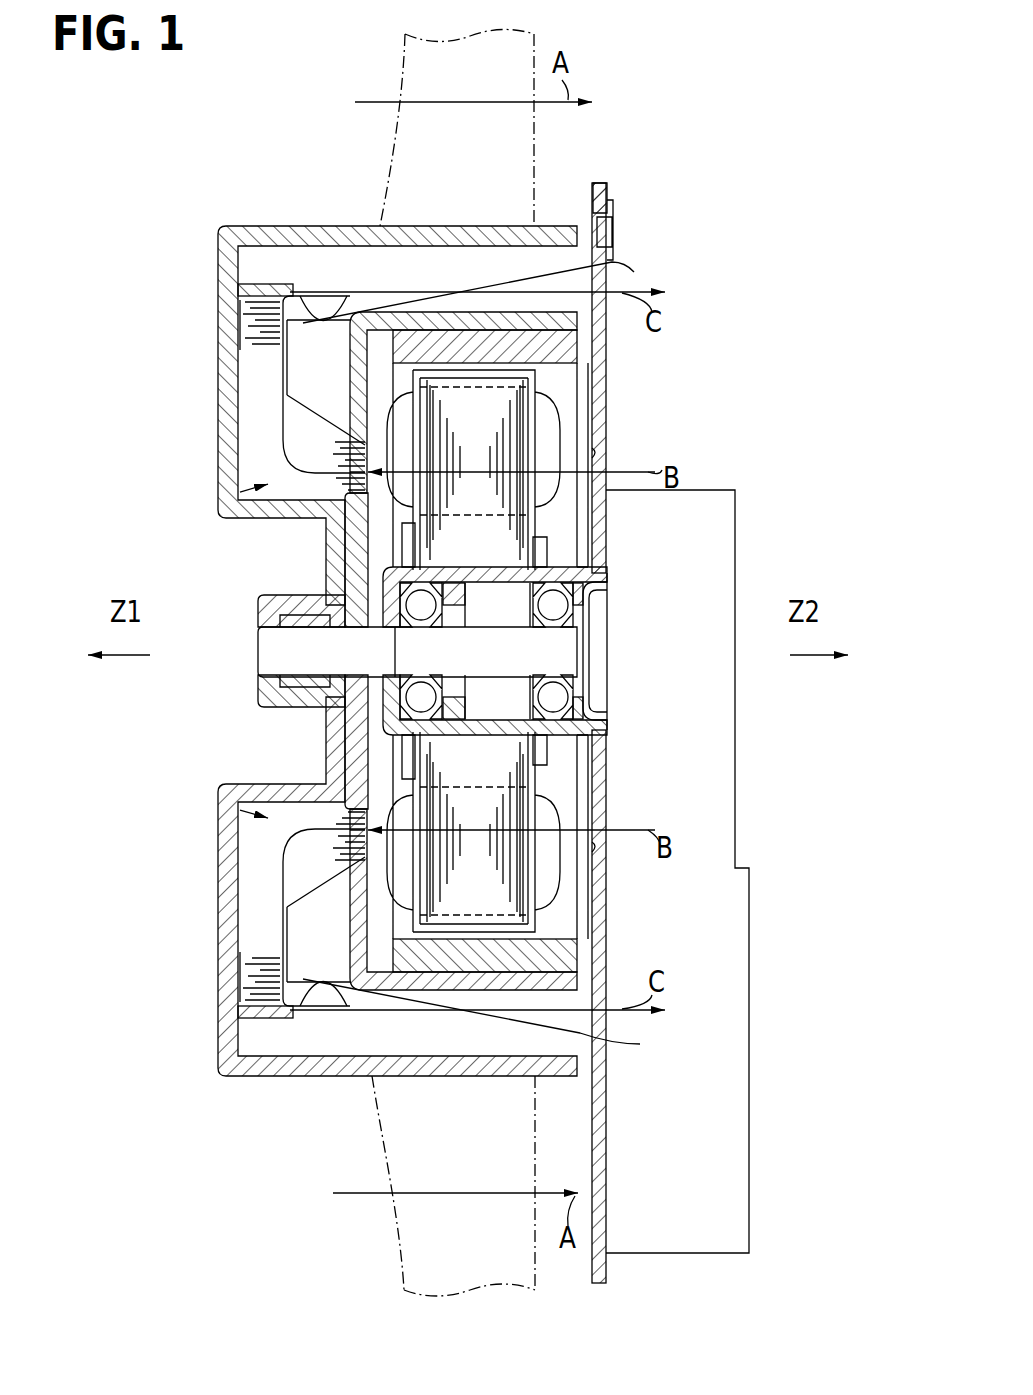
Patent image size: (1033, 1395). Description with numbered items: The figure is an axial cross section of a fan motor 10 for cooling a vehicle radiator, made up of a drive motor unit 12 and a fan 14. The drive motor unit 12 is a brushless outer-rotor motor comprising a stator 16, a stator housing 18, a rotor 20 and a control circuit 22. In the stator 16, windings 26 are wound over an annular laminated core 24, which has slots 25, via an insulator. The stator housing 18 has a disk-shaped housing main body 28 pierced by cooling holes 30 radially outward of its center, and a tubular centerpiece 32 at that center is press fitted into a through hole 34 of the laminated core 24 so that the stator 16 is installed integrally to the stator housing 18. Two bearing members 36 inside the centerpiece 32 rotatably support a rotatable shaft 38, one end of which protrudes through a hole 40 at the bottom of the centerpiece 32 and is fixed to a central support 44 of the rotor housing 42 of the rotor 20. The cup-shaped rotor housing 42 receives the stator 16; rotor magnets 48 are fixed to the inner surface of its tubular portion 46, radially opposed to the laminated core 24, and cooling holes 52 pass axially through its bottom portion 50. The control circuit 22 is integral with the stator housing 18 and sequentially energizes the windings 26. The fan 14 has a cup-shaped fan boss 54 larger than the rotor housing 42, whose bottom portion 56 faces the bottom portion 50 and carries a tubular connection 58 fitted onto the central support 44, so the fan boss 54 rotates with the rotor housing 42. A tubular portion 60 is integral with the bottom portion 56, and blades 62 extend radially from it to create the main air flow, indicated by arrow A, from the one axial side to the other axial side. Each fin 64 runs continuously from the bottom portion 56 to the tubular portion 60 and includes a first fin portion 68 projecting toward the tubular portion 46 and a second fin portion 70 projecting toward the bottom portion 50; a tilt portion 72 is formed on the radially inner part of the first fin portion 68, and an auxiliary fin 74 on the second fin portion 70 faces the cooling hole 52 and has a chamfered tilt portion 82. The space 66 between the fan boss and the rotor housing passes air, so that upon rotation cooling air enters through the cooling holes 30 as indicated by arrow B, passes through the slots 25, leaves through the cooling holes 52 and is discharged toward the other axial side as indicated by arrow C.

The fan motor 10 is at (128, 225).
The drive motor unit 12 is at (547, 305).
The fan 14 is at (350, 615).
The stator 16 is at (581, 638).
The stator housing 18 is at (608, 360).
The rotor 20 is at (469, 553).
The control circuit 22 is at (735, 490).
The laminated core 24 is at (560, 400).
The slots 25 is at (493, 513).
The windings 26 is at (580, 425).
The housing main body 28 is at (615, 447).
The cooling holes 30 is at (600, 457).
The centerpiece 32 is at (604, 572).
The through hole 34 is at (604, 604).
The bearing members 36 is at (432, 627).
The rotatable shaft 38 is at (258, 660).
The hole 40 is at (395, 632).
The rotor housing 42 is at (440, 306).
The central support 44 is at (312, 596).
The tubular portion 46 is at (520, 320).
The rotor magnets 48 is at (482, 340).
The bottom portion 50 is at (350, 376).
The cooling holes 52 is at (358, 428).
The fan boss 54 is at (217, 398).
The bottom portion 56 is at (217, 372).
The tubular connection 58 is at (275, 596).
The tubular portion 60 is at (280, 226).
The blades 62 is at (391, 137).
The fin 64 is at (225, 645).
The internal space 66 is at (238, 492).
The first fin portion 68 is at (265, 304).
The second fin portion 70 is at (283, 347).
The tilt portion 72 is at (488, 659).
The auxiliary fin 74 is at (312, 516).
The tilt portion 82 is at (333, 414).